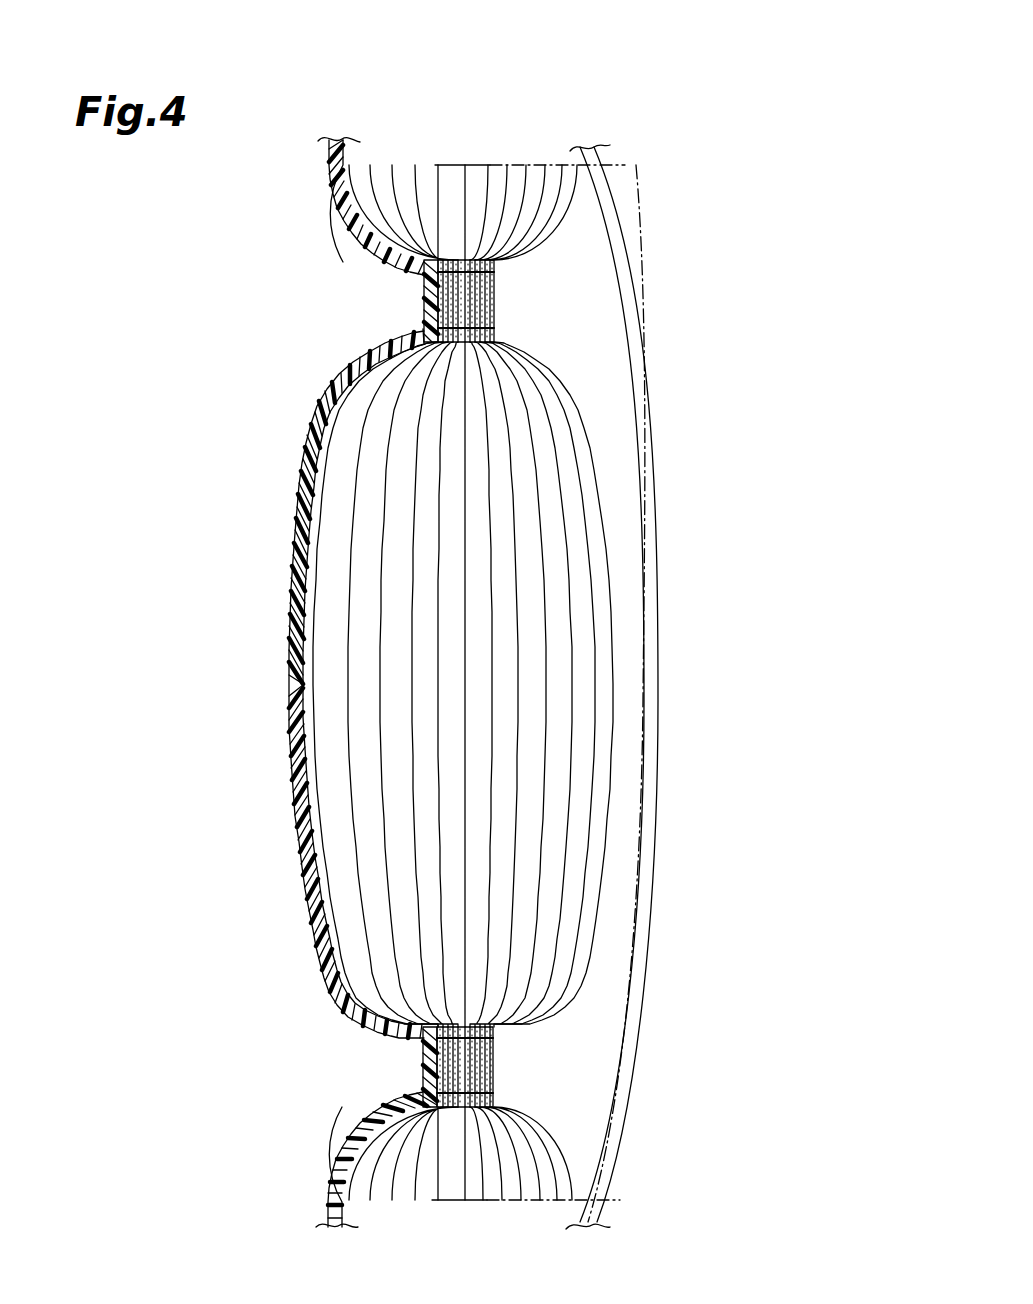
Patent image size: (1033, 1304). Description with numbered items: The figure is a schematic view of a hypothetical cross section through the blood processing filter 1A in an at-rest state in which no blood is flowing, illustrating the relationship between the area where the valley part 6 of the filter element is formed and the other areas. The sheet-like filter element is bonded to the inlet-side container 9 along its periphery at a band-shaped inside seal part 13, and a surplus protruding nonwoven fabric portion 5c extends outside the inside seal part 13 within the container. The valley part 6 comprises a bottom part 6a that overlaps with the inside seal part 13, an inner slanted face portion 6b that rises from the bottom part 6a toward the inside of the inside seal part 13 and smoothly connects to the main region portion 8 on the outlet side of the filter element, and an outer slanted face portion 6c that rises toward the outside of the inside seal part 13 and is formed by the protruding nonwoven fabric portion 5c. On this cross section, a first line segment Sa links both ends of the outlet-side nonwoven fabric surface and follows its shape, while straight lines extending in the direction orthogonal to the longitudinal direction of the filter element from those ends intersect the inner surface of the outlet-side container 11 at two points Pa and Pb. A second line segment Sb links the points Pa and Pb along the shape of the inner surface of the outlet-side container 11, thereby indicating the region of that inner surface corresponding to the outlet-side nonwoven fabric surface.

The blood processing filter 1A is at (706, 84).
The inlet-side container 9 is at (331, 192).
The protruding nonwoven fabric portion 5c is at (367, 212).
The inside seal part 13 is at (426, 292).
The valley part 6 is at (710, 225).
The outer slanted face portion 6c is at (497, 260).
The bottom part 6a is at (497, 307).
The inner slanted face portion 6b is at (497, 341).
The main region portion 8 is at (614, 666).
The first line segment Sa is at (578, 405).
The second line segment Sb is at (636, 472).
The outlet-side container 11 is at (614, 197).
The point Pa is at (573, 165).
The point Pb is at (577, 1200).